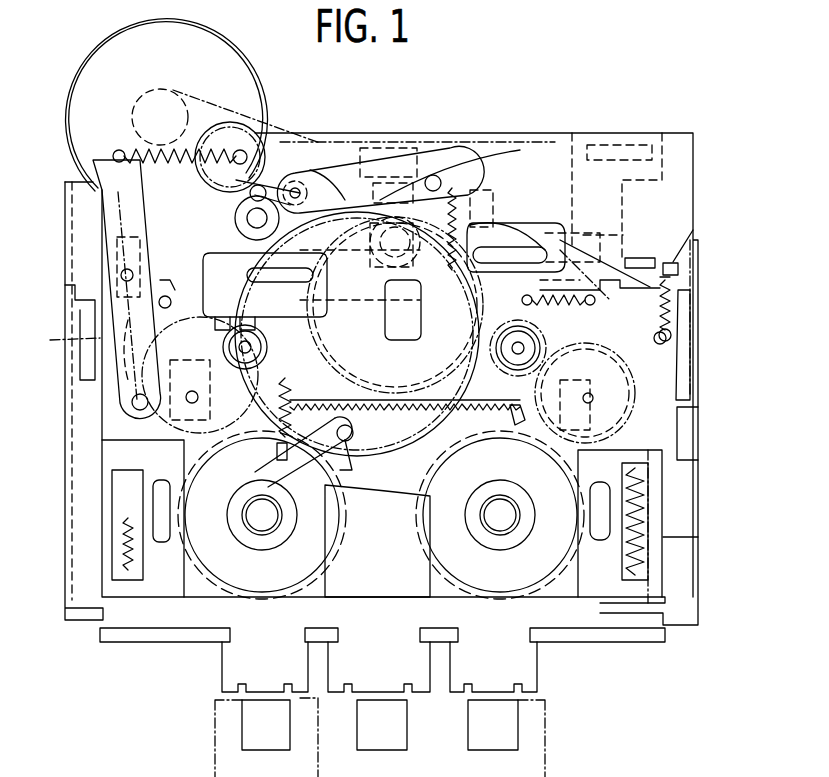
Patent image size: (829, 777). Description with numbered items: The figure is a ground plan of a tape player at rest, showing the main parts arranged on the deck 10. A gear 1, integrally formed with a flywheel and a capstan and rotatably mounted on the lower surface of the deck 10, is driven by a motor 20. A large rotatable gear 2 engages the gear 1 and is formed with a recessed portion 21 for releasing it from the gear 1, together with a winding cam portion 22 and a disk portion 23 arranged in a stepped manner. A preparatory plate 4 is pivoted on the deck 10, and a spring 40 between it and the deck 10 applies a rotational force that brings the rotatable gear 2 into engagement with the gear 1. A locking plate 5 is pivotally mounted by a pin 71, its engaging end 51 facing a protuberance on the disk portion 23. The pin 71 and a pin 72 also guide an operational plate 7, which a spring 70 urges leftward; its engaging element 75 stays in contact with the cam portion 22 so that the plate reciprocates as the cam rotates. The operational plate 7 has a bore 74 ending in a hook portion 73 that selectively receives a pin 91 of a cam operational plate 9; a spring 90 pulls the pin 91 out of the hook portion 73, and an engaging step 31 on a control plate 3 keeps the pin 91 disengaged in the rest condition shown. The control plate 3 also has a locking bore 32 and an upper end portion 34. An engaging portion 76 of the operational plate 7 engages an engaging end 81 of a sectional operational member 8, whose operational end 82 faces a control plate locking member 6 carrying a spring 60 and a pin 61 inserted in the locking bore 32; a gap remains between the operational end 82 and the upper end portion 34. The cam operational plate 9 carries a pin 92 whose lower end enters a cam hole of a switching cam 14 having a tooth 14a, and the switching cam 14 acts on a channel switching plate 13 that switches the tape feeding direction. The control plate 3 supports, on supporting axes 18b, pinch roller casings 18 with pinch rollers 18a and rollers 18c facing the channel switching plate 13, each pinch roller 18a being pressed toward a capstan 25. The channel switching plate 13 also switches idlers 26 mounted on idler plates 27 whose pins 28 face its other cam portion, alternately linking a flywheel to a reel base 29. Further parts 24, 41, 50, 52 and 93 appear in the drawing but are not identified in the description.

The gear 1 is at (522, 416).
The rotatable gear 2 is at (516, 237).
The control plate 3 is at (497, 180).
The preparatory plate 4 is at (345, 472).
The locking plate 5 is at (670, 268).
The control plate locking member 6 is at (112, 407).
The operational plate 7 is at (495, 215).
The sectional operational member 8 is at (178, 238).
The cam operational plate 9 is at (440, 170).
The deck 10 is at (620, 145).
The channel switching plate 13 is at (654, 340).
The switching cam 14 is at (325, 150).
The tooth 14a is at (340, 160).
The pinch roller casing 18 is at (215, 232).
The pinch roller 18a is at (353, 455).
The supporting axes 18b is at (159, 303).
The roller 18c is at (181, 289).
The motor 20 is at (225, 60).
The recessed portion 21 is at (505, 365).
The winding cam portion 22 is at (400, 148).
The disk portion 23 is at (385, 410).
The rack 24 is at (405, 398).
The capstan 25 is at (585, 393).
The idler 26 is at (725, 396).
The idler plate 27 is at (575, 240).
The pin 28 is at (391, 305).
The reel base 29 is at (381, 526).
The engaging step 31 is at (417, 127).
The locking bore 32 is at (117, 250).
The upper end portion 34 is at (75, 183).
The spring 40 is at (277, 447).
The link 41 is at (318, 452).
The spring 50 is at (670, 285).
The engaging end 51 is at (512, 432).
The stopper 52 is at (648, 258).
The spring 60 is at (140, 150).
The pin 61 is at (121, 275).
The spring 70 is at (595, 322).
The pin 71 is at (558, 240).
The pin 72 is at (264, 216).
The hook portion 73 is at (441, 178).
The bore 74 is at (447, 180).
The engaging element 75 is at (413, 246).
The engaging portion 76 is at (135, 328).
The engaging end 81 is at (204, 375).
The operational end 82 is at (127, 289).
The spring 90 is at (505, 230).
The pin 91 is at (470, 175).
The pin 92 is at (297, 180).
The belt 93 is at (265, 190).